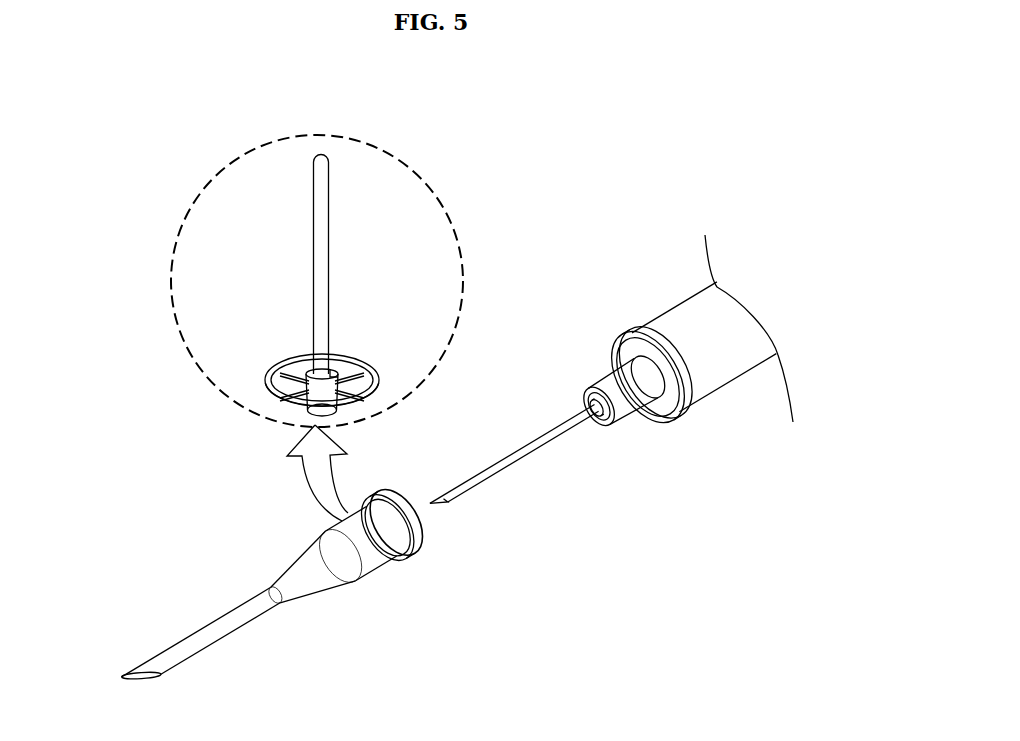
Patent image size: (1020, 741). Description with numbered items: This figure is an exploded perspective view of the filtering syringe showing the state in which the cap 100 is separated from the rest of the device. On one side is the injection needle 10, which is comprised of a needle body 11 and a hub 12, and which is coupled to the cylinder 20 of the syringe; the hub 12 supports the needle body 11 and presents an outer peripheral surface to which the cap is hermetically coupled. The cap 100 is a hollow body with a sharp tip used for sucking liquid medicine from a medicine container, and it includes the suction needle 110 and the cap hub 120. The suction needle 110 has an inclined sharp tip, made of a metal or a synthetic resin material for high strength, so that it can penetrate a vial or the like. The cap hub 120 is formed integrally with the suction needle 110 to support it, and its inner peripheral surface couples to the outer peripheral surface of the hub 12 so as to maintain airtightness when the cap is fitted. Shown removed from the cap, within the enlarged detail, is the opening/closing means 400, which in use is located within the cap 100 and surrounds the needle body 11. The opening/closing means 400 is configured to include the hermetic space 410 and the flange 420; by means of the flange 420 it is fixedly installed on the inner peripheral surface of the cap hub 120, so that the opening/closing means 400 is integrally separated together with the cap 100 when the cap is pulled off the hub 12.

The injection needle 10 is at (611, 395).
The needle body 11 is at (530, 447).
The hub 12 is at (628, 397).
The cylinder 20 is at (682, 322).
The cap 100 is at (309, 575).
The suction needle 110 is at (212, 628).
The cap hub 120 is at (412, 543).
The opening/closing means 400 is at (240, 255).
The hermetic space 410 is at (314, 416).
The flange 420 is at (282, 373).